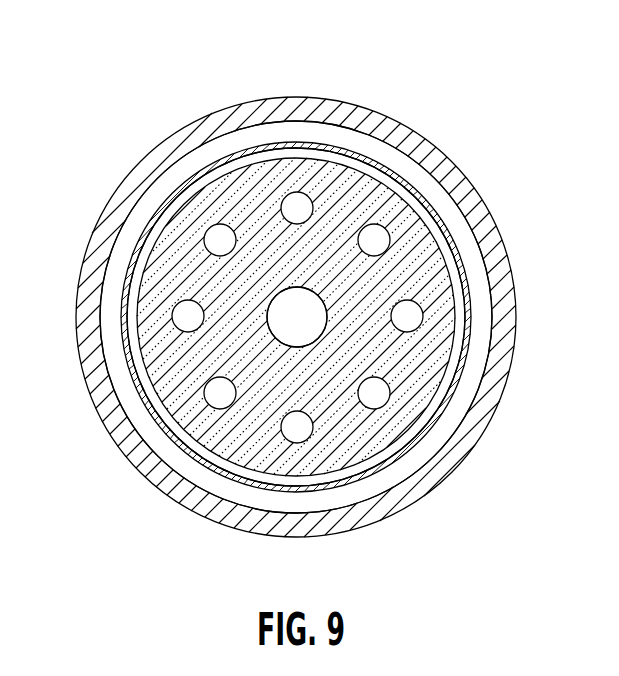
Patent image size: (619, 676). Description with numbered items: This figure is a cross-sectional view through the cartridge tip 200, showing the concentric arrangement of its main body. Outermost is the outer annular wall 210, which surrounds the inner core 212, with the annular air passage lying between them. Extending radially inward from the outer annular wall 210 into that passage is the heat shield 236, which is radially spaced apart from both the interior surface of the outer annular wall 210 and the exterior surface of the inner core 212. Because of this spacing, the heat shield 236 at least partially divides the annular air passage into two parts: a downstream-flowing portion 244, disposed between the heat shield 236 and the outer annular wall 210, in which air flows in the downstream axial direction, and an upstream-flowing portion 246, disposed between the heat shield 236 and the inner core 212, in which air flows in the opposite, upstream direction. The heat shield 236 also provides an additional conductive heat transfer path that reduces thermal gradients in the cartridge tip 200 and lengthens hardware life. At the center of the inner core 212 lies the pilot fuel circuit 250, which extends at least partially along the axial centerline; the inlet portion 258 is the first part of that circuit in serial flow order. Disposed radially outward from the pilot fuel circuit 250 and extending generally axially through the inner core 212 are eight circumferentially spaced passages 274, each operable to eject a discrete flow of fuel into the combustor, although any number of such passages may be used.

The cartridge tip 200 is at (92, 114).
The outer annular wall 210 is at (505, 307).
The inner core 212 is at (420, 272).
The heat shield 236 is at (455, 390).
The downstream-flowing portion 244 is at (440, 415).
The upstream-flowing portion 246 is at (420, 452).
The pilot fuel circuit 250 is at (269, 324).
The inlet portion 258 is at (327, 316).
The circumferentially spaced passages 274 is at (283, 203).